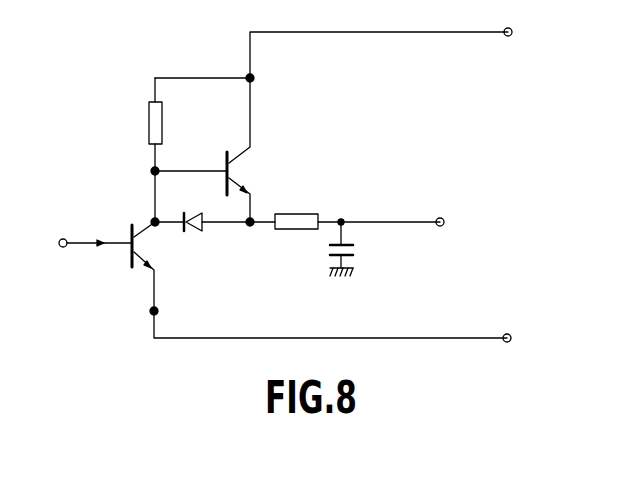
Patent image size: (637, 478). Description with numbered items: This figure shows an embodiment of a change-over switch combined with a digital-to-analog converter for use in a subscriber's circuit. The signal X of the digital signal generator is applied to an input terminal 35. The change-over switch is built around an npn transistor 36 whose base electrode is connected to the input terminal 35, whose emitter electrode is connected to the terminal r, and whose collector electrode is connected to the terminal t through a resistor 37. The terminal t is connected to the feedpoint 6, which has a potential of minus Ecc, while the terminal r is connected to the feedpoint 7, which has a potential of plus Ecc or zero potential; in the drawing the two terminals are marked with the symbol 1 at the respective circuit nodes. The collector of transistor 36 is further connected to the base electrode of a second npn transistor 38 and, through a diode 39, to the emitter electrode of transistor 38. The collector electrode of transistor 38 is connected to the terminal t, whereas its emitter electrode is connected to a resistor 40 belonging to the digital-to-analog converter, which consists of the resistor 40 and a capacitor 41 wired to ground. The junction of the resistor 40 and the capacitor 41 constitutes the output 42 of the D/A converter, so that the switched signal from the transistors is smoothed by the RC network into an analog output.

The node terminal 1 is at (266, 70).
The feedpoint 6 is at (508, 36).
The feedpoint 7 is at (507, 334).
The input terminal 35 is at (63, 247).
The npn transistor 36 is at (137, 246).
The resistor 37 is at (163, 122).
The npn transistor 38 is at (235, 171).
The diode 39 is at (203, 228).
The resistor 40 is at (289, 213).
The capacitor 41 is at (330, 256).
The output 42 is at (440, 217).
The signal X is at (64, 220).